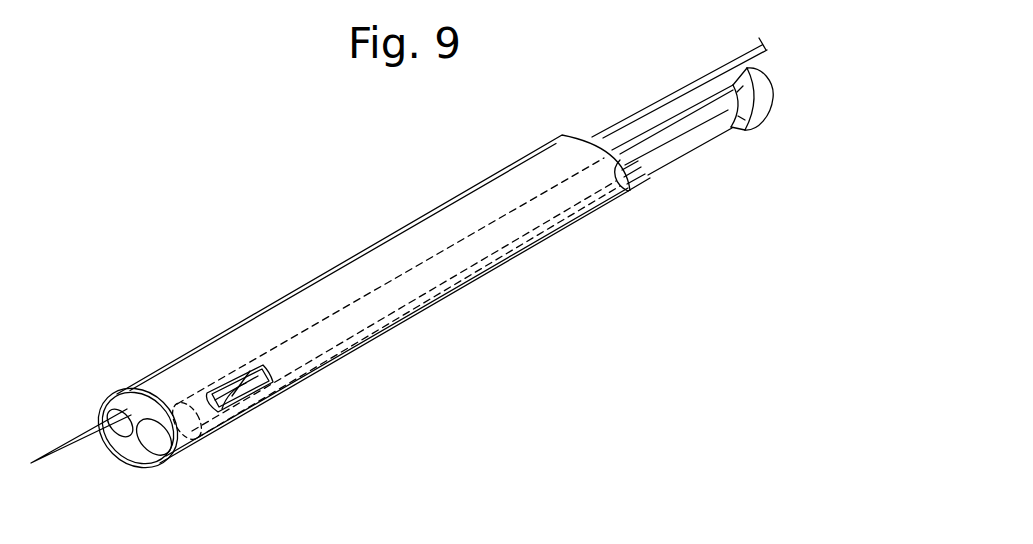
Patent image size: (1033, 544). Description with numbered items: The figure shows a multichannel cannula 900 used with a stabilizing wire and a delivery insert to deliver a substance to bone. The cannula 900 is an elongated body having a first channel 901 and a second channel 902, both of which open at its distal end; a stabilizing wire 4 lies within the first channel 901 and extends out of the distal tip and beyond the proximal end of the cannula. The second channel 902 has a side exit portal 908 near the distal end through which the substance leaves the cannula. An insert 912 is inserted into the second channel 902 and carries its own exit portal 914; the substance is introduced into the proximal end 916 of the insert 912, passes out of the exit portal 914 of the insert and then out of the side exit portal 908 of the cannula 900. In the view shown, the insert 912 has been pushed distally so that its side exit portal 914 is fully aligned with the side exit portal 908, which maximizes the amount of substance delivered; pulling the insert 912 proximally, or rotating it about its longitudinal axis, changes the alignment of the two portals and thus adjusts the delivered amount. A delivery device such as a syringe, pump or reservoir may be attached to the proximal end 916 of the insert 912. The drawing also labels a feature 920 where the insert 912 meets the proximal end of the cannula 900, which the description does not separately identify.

The multichannel cannula 900 is at (292, 290).
The first channel 901 is at (127, 433).
The second channel 902 is at (160, 440).
The side exit portal 908 is at (270, 385).
The exit portal 914 is at (226, 404).
The needle 4 is at (660, 97).
The insert 912 is at (684, 140).
The proximal end 916 is at (773, 92).
The collar 920 is at (650, 180).